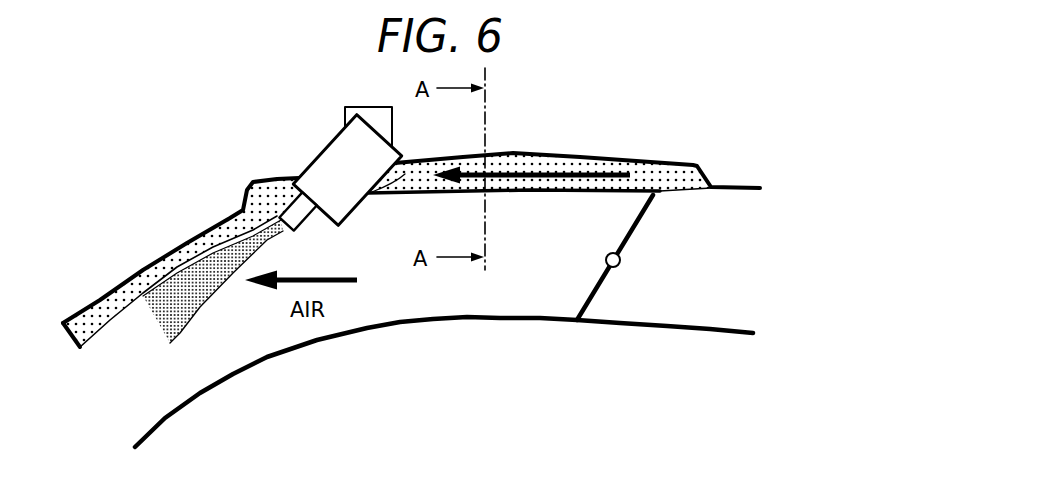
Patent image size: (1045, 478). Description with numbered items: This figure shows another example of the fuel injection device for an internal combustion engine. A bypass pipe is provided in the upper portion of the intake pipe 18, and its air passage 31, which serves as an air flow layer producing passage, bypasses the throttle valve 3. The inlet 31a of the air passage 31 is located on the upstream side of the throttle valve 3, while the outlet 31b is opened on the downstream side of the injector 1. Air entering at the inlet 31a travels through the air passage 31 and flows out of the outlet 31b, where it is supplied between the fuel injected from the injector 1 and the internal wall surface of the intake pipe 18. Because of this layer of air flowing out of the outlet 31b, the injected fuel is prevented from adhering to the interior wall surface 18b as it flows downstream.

The injector 1 is at (330, 153).
The throttle valve 3 is at (600, 287).
The intake pipe 18 is at (722, 182).
The interior wall surface 18b is at (117, 272).
The air passage 31 is at (562, 172).
The inlet 31a is at (690, 186).
The outlet 31b is at (200, 243).